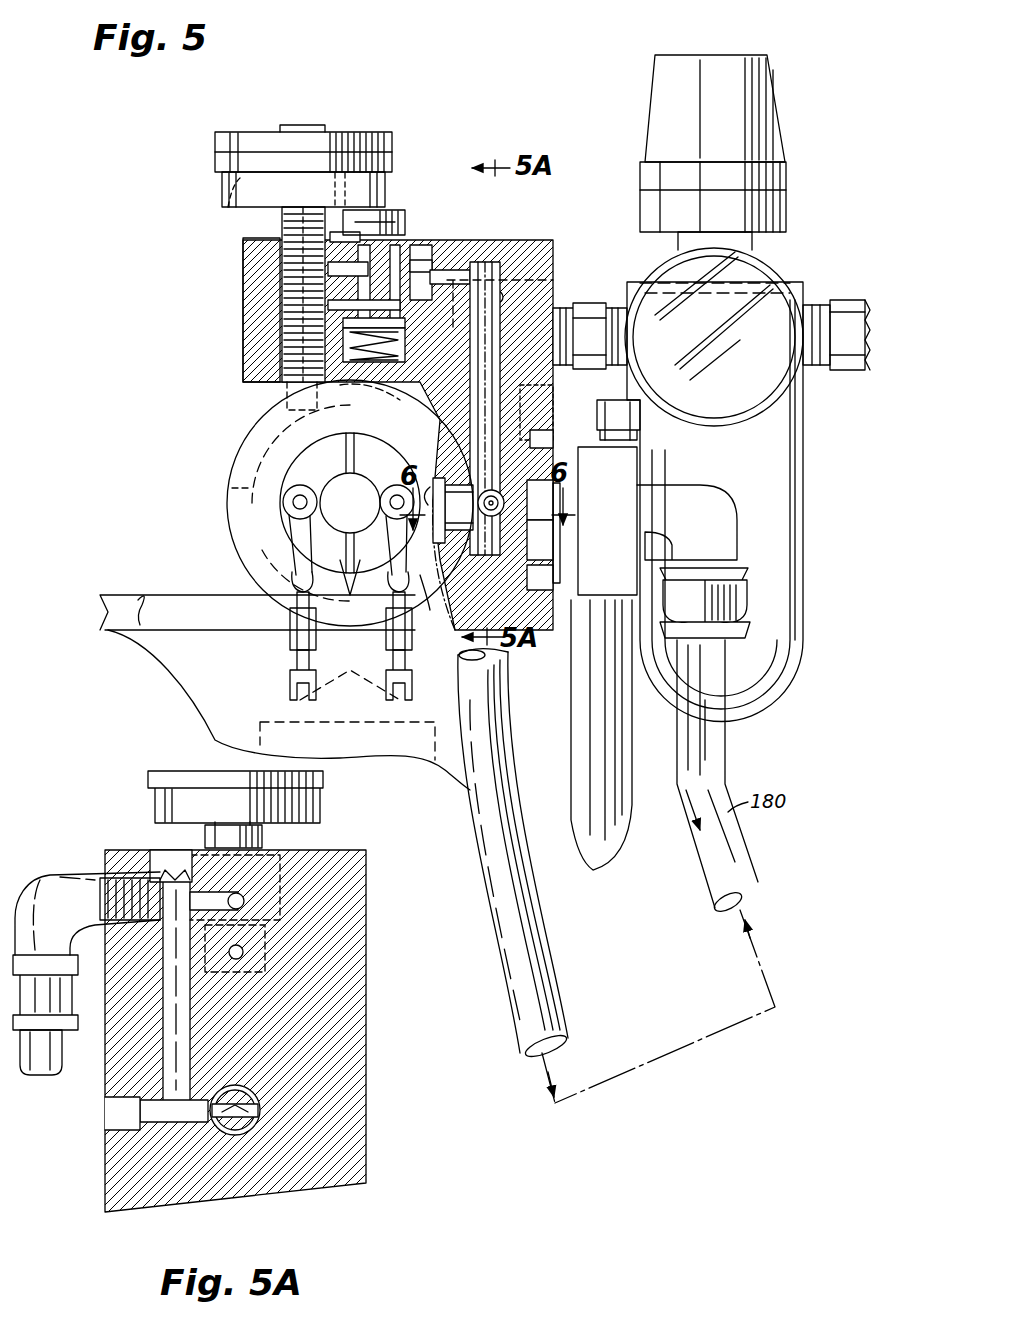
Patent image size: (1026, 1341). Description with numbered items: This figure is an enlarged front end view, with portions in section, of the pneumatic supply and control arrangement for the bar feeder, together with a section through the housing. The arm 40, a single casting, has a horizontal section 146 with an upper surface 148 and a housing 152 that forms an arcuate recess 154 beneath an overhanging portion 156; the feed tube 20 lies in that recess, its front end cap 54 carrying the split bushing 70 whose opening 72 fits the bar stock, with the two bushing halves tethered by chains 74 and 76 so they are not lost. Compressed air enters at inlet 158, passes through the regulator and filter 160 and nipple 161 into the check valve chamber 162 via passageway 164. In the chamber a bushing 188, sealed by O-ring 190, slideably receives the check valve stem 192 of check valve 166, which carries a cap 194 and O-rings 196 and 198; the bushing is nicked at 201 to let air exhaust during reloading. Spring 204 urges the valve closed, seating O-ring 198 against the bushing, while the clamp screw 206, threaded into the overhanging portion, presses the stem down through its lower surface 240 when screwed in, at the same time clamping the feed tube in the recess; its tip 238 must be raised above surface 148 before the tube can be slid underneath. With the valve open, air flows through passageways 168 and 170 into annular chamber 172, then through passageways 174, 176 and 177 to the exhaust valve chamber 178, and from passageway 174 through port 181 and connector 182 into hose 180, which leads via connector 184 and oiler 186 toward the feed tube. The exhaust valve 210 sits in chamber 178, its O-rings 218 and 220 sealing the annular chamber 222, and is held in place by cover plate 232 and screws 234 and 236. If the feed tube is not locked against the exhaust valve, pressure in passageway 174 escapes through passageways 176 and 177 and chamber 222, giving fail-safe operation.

In FIG. 5, the feed tube 20 is at (232, 488).
In FIG. 5, the arm 40 is at (178, 676).
In FIG. 5, the front end cap 54 is at (230, 520).
In FIG. 5, the split bushing 70 is at (345, 593).
In FIG. 5, the opening 72 is at (365, 515).
In FIG. 5, the chain 74 is at (290, 642).
In FIG. 5, the chain 76 is at (411, 636).
In FIG. 5, the horizontal section 146 is at (100, 618).
In FIG. 5, the upper surface 148 is at (257, 612).
In FIG. 5, the housing 152 is at (553, 245).
In FIG. 5A, the housing 152 is at (372, 912).
In FIG. 5, the arcuate recess 154 is at (433, 607).
In FIG. 5, the overhanging portion 156 is at (250, 380).
In FIG. 5, the inlet 158 is at (842, 365).
In FIG. 5, the regulator and filter 160 is at (795, 180).
In FIG. 5, the nipple 161 is at (592, 305).
In FIG. 5, the check valve chamber 162 is at (350, 382).
In FIG. 5, the passageway 164 is at (540, 400).
In FIG. 5A, the passageway 164 is at (243, 952).
In FIG. 5, the check valve 166 is at (330, 236).
In FIG. 5, the passageway 168 is at (330, 306).
In FIG. 5, the passageway 170 is at (405, 345).
In FIG. 5, the annular chamber 172 is at (330, 270).
In FIG. 5, the passageway 174 is at (540, 280).
In FIG. 5A, the passageway 174 is at (240, 900).
In FIG. 5, the passageway 176 is at (498, 262).
In FIG. 5A, the passageway 176 is at (183, 1045).
In FIG. 5A, the passageway 177 is at (145, 1122).
In FIG. 5, the exhaust valve chamber 178 is at (486, 585).
In FIG. 5A, the exhaust valve chamber 178 is at (220, 1140).
In FIG. 5, the hose 180 is at (540, 960).
In FIG. 5A, the hose 180 is at (32, 1060).
In FIG. 5A, the port 181 is at (158, 865).
In FIG. 5, the connector 182 is at (610, 440).
In FIG. 5A, the connector 182 is at (60, 872).
In FIG. 5, the connector 184 is at (725, 478).
In FIG. 5, the oiler 186 is at (606, 830).
In FIG. 5, the bushing 188 is at (490, 294).
In FIG. 5, the O-ring 190 is at (300, 265).
In FIG. 5, the check valve stem 192 is at (445, 272).
In FIG. 5, the cap 194 is at (390, 212).
In FIG. 5A, the cap 194 is at (240, 826).
In FIG. 5, the O-ring 196 is at (343, 190).
In FIG. 5, the O-ring 198 is at (342, 322).
In FIG. 5, the nick 201 is at (412, 250).
In FIG. 5, the spring 204 is at (377, 400).
In FIG. 5, the clamp screw 206 is at (222, 187).
In FIG. 5A, the clamp screw 206 is at (150, 793).
In FIG. 5, the exhaust valve 210 is at (553, 505).
In FIG. 5, the O-ring 218 is at (462, 530).
In FIG. 5, the O-ring 220 is at (553, 535).
In FIG. 5, the annular chamber 222 is at (440, 465).
In FIG. 5, the cover plate 232 is at (540, 585).
In FIG. 5, the screw 234 is at (553, 440).
In FIG. 5, the screw 236 is at (553, 575).
In FIG. 5, the tip 238 is at (348, 514).
In FIG. 5, the lower surface 240 is at (228, 205).
In FIG. 5A, the lower surface 240 is at (316, 822).